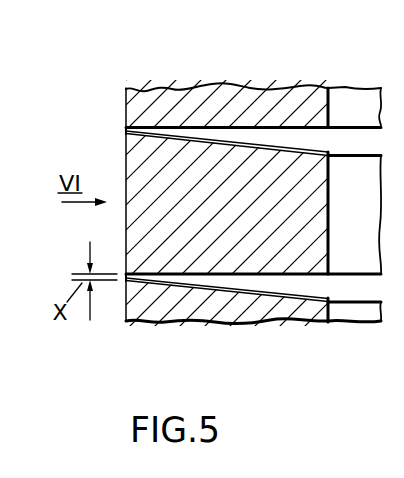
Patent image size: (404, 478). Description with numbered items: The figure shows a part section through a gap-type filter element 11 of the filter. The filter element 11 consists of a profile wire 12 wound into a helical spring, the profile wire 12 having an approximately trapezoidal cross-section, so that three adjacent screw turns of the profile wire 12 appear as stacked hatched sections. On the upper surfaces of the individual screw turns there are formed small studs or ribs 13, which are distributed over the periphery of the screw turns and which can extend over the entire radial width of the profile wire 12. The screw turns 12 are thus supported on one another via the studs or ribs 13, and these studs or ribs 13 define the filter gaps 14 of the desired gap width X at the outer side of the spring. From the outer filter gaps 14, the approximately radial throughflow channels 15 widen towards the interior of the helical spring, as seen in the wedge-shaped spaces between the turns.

The gap-type filter element 11 is at (327, 70).
The profile wire 12 is at (183, 102).
The studs or ribs 13 is at (320, 151).
The filter gaps 14 is at (123, 133).
The throughflow channels 15 is at (260, 133).